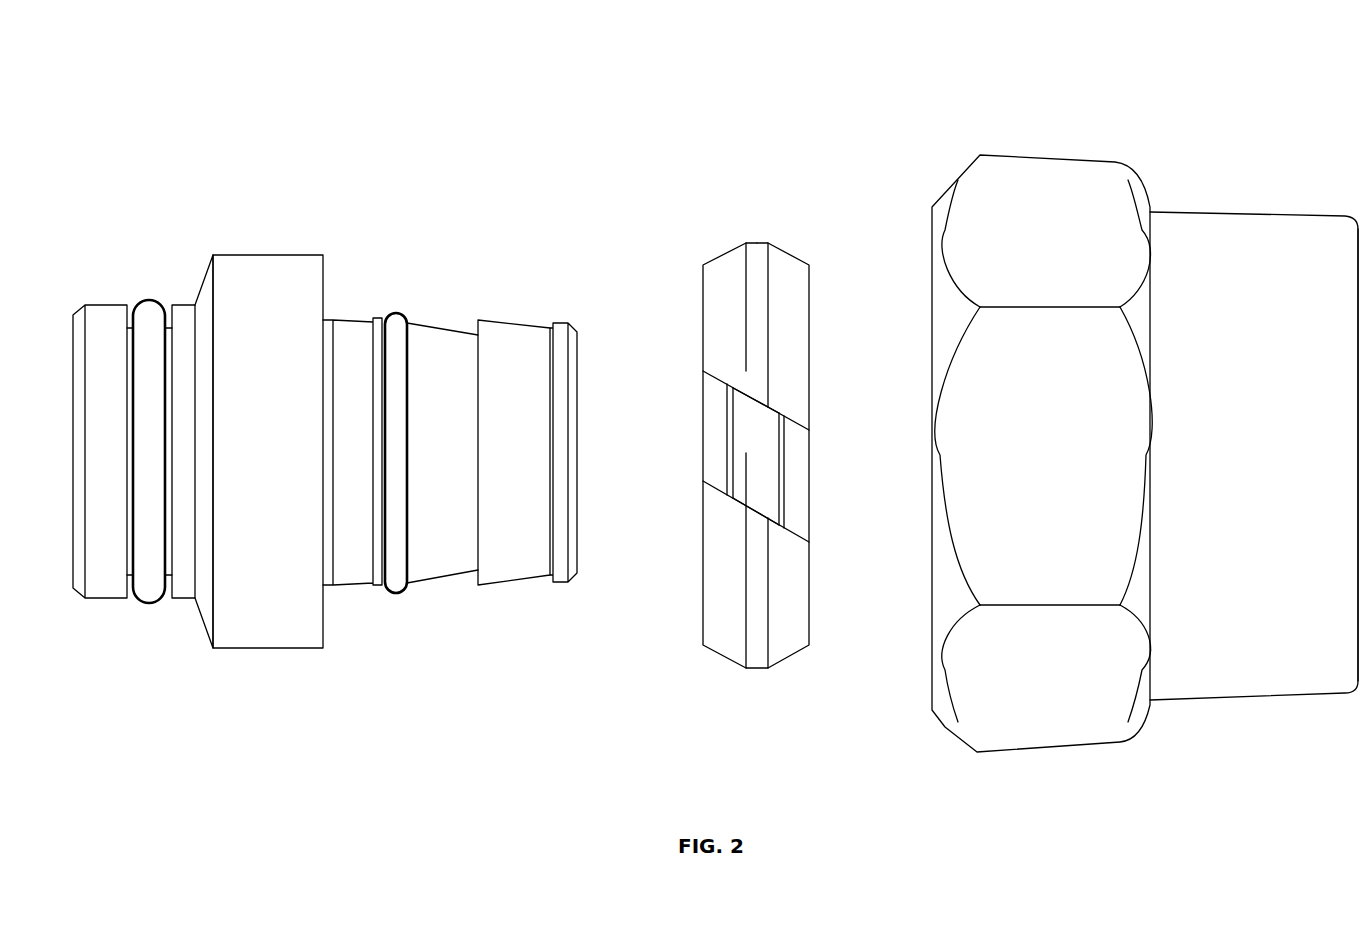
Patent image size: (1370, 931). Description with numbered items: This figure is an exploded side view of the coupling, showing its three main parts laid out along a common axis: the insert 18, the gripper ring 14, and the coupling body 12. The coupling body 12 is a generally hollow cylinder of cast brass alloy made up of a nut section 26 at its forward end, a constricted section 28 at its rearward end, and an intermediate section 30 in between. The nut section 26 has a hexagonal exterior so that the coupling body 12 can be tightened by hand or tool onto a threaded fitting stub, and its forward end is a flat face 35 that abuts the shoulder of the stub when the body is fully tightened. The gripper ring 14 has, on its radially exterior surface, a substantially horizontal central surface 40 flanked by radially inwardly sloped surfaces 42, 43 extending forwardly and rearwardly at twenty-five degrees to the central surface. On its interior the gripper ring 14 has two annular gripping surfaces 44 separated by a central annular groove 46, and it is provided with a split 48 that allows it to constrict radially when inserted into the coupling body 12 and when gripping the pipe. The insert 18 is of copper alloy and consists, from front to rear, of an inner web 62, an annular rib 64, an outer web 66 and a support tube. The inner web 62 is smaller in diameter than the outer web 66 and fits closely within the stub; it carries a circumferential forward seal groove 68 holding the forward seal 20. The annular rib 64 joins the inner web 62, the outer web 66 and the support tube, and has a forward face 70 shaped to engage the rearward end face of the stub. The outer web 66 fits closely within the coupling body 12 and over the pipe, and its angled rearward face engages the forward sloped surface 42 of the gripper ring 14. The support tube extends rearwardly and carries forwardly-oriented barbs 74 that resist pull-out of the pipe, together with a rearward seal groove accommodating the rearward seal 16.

The coupling body 12 is at (1152, 113).
The gripper ring 14 is at (778, 152).
The rearward seal 16 is at (397, 325).
The insert 18 is at (320, 152).
The forward seal 20 is at (149, 318).
The nut section 26 is at (1041, 175).
The constricted section 28 is at (1323, 233).
The intermediate section 30 is at (1183, 228).
The flat face 35 is at (930, 237).
The horizontal central surface 40 is at (757, 241).
The forward exterior sloped surface 42 is at (723, 268).
The rearward exterior sloped surface 43 is at (788, 268).
The annular gripping surface 44 is at (713, 418).
The central annular groove 46 is at (756, 477).
The split 48 is at (762, 432).
The inner web 62 is at (108, 318).
The annular rib 64 is at (207, 330).
The outer web 66 is at (283, 270).
The forward seal groove 68 is at (169, 305).
The forward face 70 is at (202, 330).
The barbs 74 is at (497, 335).